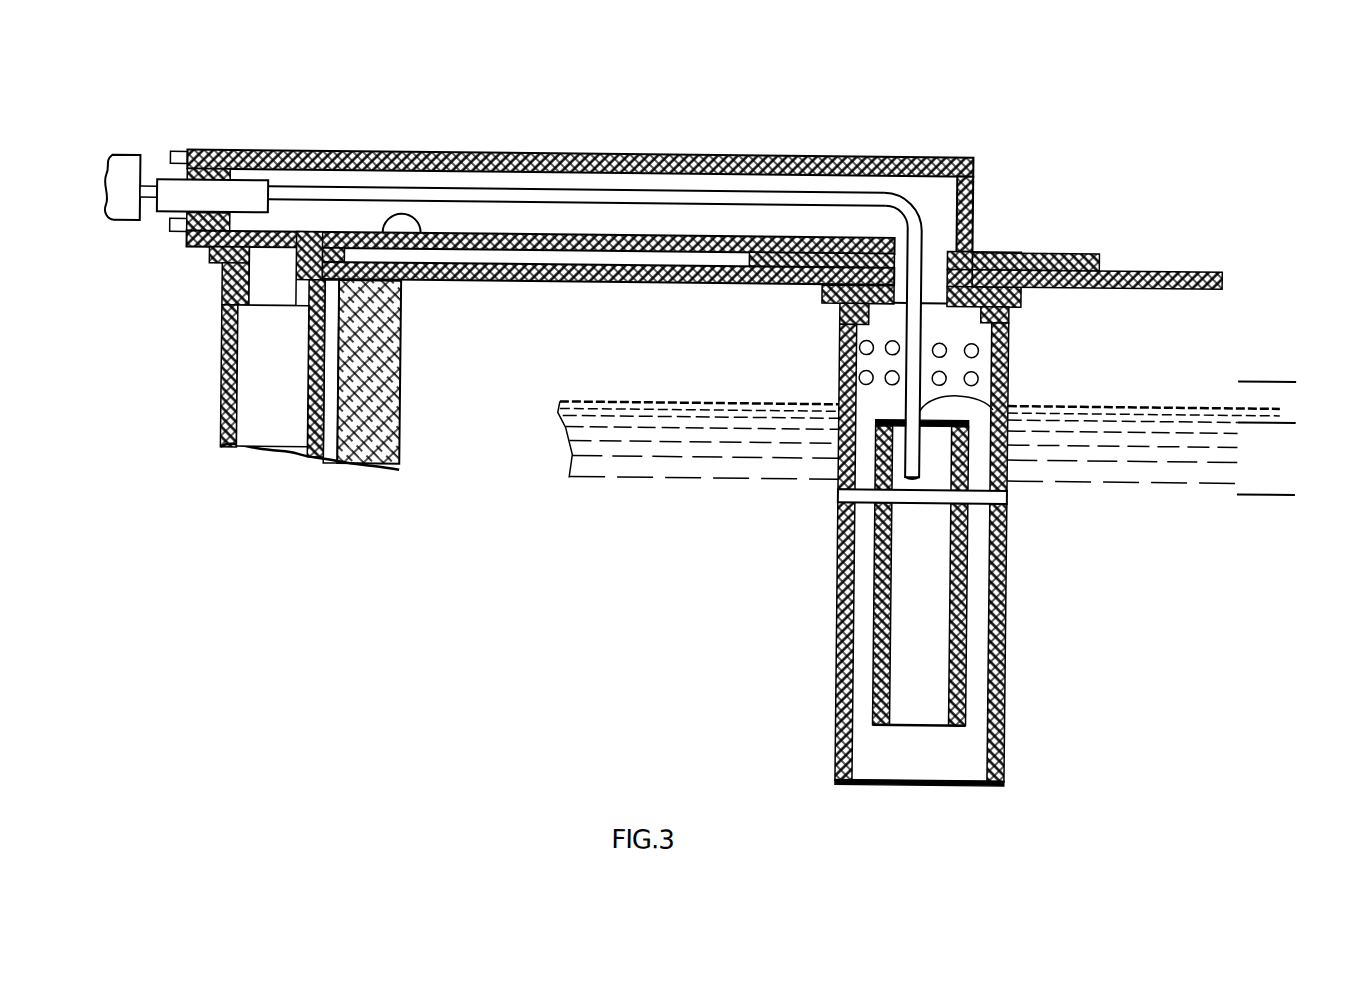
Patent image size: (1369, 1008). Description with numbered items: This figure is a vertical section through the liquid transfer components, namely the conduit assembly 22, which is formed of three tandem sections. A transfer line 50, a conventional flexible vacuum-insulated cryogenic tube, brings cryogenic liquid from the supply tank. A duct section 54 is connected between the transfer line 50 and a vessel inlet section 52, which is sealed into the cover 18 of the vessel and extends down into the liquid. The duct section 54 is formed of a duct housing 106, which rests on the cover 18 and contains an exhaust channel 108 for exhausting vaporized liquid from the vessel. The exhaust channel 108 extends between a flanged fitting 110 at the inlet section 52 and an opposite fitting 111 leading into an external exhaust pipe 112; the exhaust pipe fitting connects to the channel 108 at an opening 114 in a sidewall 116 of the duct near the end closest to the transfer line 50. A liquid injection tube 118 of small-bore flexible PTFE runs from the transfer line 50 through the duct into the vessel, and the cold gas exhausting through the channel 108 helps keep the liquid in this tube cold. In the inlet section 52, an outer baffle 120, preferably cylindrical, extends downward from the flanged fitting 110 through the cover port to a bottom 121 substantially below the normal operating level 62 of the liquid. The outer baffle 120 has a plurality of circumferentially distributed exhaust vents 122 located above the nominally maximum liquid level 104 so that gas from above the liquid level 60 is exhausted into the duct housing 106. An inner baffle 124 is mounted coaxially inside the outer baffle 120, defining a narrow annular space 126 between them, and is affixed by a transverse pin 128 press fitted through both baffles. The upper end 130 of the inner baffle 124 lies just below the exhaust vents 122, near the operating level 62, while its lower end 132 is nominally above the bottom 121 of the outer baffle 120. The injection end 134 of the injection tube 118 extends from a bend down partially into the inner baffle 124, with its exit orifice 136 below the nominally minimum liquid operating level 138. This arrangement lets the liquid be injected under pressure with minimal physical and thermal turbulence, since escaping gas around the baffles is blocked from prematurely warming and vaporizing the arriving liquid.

The cover 18 is at (541, 283).
The conduit assembly 22 is at (572, 152).
The transfer line 50 is at (127, 155).
The vessel inlet section 52 is at (833, 352).
The duct section 54 is at (658, 117).
The liquid level 60 is at (953, 423).
The normal operating level 62 is at (1272, 416).
The nominally maximum liquid level 104 is at (1277, 375).
The duct housing 106 is at (527, 154).
The exhaust channel 108 is at (597, 187).
The flanged fitting 110 is at (1024, 292).
The fitting 111 is at (299, 288).
The exhaust pipe 112 is at (223, 396).
The opening 114 is at (223, 279).
The sidewall 116 is at (422, 235).
The liquid injection tube 118 is at (718, 191).
The outer baffle 120 is at (1015, 663).
The bottom of outer baffle 121 is at (1006, 783).
The exhaust vents 122 is at (981, 347).
The inner baffle 124 is at (931, 604).
The annular space 126 is at (983, 733).
The transverse pin 128 is at (1013, 493).
The upper end of inner baffle 130 is at (885, 417).
The lower end of inner baffle 132 is at (916, 723).
The injection end 134 is at (1010, 399).
The exit orifice 136 is at (922, 477).
The nominally minimum liquid operating level 138 is at (1278, 488).